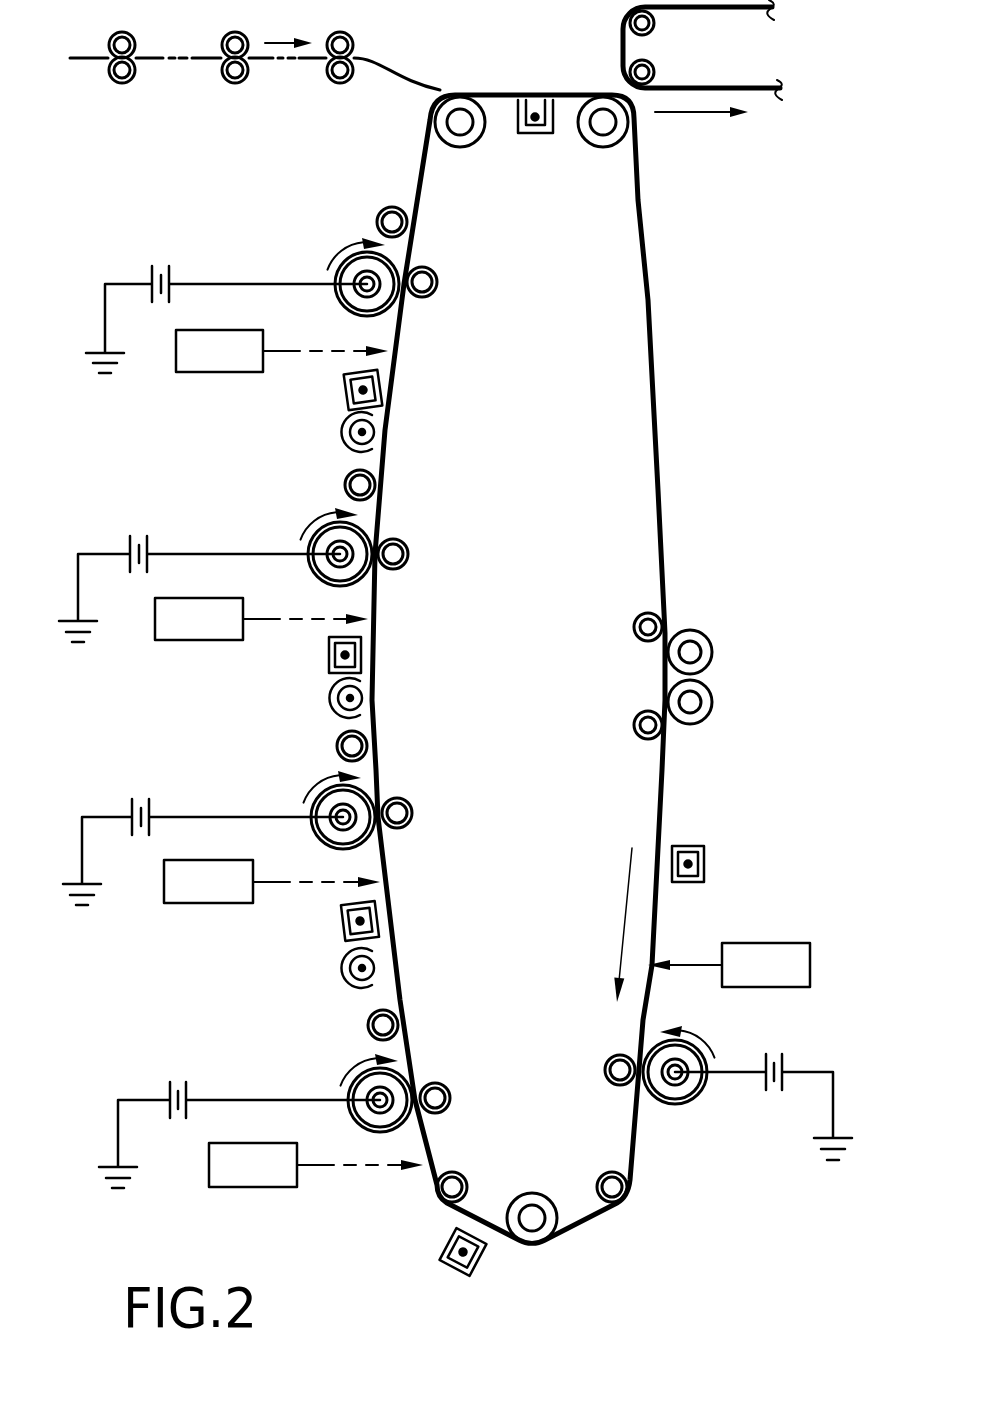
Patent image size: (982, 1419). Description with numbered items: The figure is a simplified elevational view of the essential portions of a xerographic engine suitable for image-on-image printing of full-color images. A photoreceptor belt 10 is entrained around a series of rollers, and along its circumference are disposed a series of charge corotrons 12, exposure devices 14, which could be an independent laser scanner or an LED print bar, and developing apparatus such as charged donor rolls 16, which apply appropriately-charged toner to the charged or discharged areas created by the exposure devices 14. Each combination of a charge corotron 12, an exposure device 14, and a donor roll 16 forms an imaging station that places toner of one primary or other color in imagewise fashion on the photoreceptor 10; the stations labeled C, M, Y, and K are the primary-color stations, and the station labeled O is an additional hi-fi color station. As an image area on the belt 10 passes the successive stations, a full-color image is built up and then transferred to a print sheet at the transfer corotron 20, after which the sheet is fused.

The photoreceptor belt 10 is at (658, 490).
The charge corotron 12 is at (347, 388).
The exposure device 14 is at (242, 372).
The charged donor roll 16 is at (382, 297).
The transfer corotron 20 is at (535, 120).